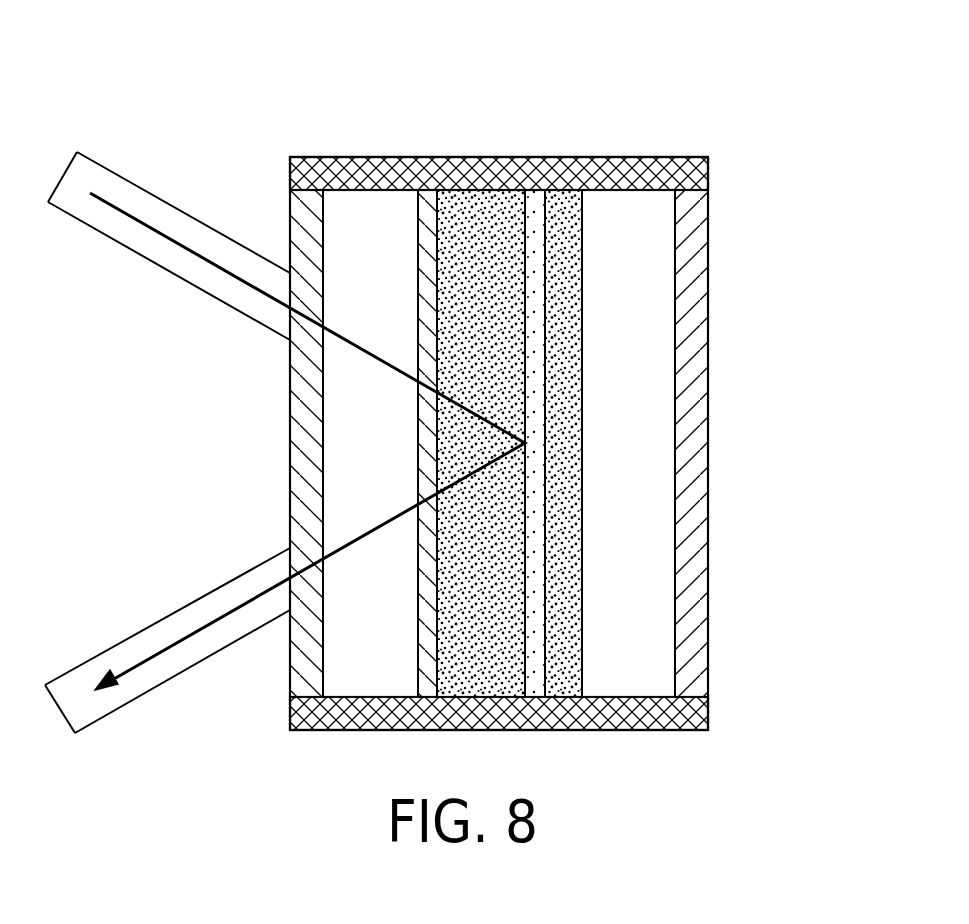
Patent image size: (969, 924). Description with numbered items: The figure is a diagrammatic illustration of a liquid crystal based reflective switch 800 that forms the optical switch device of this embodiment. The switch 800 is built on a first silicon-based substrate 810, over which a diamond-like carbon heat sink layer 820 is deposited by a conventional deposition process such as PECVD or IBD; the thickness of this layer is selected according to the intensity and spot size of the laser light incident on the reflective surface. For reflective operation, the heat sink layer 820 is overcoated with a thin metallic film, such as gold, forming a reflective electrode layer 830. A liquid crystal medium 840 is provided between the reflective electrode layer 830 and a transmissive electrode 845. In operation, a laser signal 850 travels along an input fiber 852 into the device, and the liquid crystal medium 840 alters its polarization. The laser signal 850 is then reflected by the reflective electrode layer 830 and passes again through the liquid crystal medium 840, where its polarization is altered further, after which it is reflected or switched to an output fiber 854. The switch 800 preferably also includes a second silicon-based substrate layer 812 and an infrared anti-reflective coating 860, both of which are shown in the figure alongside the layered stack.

The liquid crystal reflective switch 800 is at (740, 203).
The first silicon-based substrate 810 is at (647, 328).
The second silicon-based substrate layer 812 is at (360, 208).
The diamond-like carbon heat sink layer 820 is at (582, 431).
The reflective electrode layer 830 is at (528, 527).
The liquid crystal medium 840 is at (484, 200).
The transmissive electrode 845 is at (418, 660).
The laser signal 850 is at (160, 233).
The input fiber 852 is at (203, 292).
The output fiber 854 is at (193, 600).
The infrared anti-reflective coating 860 is at (289, 218).